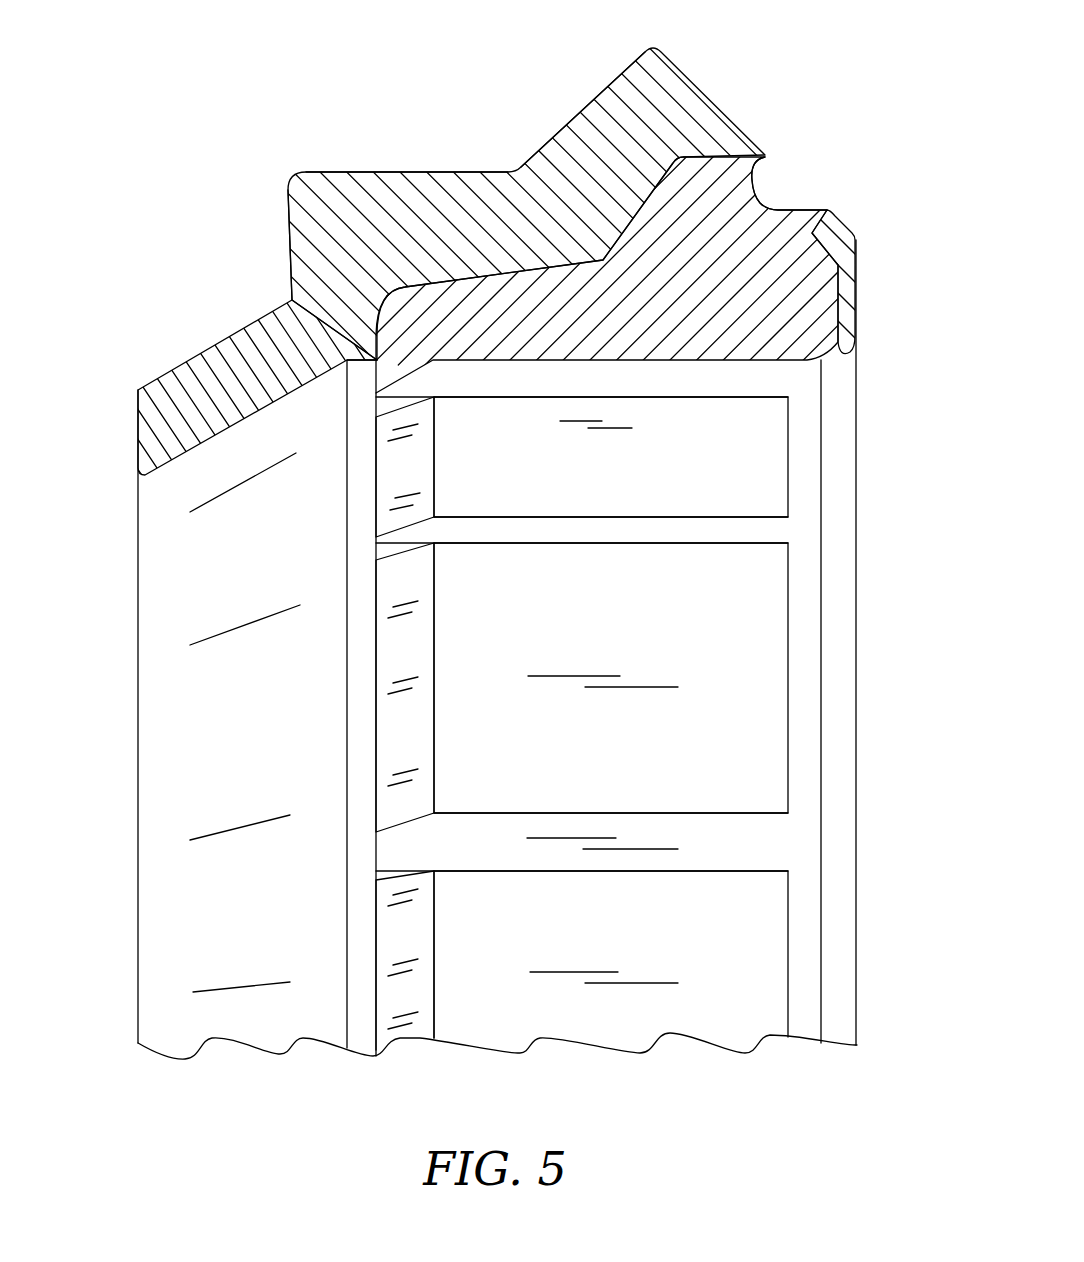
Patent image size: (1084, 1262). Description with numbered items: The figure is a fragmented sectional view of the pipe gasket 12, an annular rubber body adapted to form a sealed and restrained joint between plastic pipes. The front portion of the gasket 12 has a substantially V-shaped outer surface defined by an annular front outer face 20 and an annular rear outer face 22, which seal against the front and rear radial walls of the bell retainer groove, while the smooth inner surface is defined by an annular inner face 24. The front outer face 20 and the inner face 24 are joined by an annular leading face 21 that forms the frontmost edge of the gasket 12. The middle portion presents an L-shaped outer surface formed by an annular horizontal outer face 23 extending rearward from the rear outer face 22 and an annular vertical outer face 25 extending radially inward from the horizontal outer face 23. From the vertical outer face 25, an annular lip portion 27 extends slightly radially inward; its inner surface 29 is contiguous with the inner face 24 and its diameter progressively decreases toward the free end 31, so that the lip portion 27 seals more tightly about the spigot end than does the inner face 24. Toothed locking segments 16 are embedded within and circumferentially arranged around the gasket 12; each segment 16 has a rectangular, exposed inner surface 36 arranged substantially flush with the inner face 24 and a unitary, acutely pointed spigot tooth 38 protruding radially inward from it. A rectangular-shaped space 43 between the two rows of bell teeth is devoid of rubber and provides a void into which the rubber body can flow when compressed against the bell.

The gasket 12 is at (300, 98).
The front outer face 20 is at (723, 107).
The rear outer face 22 is at (587, 107).
The horizontal outer face 23 is at (392, 170).
The vertical outer face 25 is at (288, 238).
The rectangular-shaped space 43 is at (775, 188).
The leading face 21 is at (858, 268).
The lip portion 27 is at (178, 365).
The free end 31 is at (138, 437).
The inner surface 29 is at (193, 453).
The inner face 24 is at (760, 377).
The toothed locking segment 16 is at (783, 457).
The inner surface 36 is at (602, 702).
The spigot tooth 38 is at (405, 723).